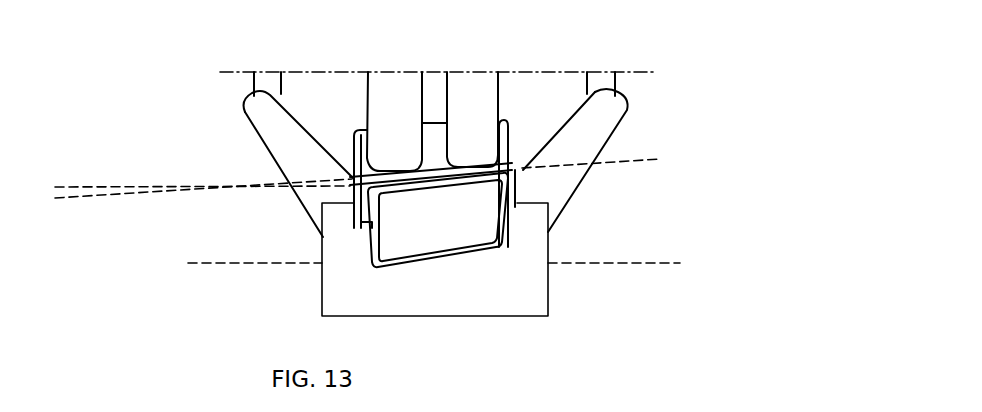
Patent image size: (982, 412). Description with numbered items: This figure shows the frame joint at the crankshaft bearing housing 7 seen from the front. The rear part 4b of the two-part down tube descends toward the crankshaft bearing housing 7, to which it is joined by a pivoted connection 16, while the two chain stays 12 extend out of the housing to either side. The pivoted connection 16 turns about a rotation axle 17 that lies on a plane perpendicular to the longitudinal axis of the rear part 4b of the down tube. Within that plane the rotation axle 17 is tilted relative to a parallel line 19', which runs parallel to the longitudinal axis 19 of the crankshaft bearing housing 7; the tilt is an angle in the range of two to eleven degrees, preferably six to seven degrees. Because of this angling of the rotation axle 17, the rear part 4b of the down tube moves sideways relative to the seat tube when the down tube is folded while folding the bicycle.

The rear part of the down tube 4b is at (400, 77).
The chain stays 12 is at (297, 196).
The pivoted connection 16 is at (482, 212).
The crankshaft bearing housing 7 is at (495, 317).
The rotation axle 17 is at (652, 159).
The parallel line 19' is at (202, 149).
The longitudinal axis of the crankshaft bearing housing 19 is at (441, 303).